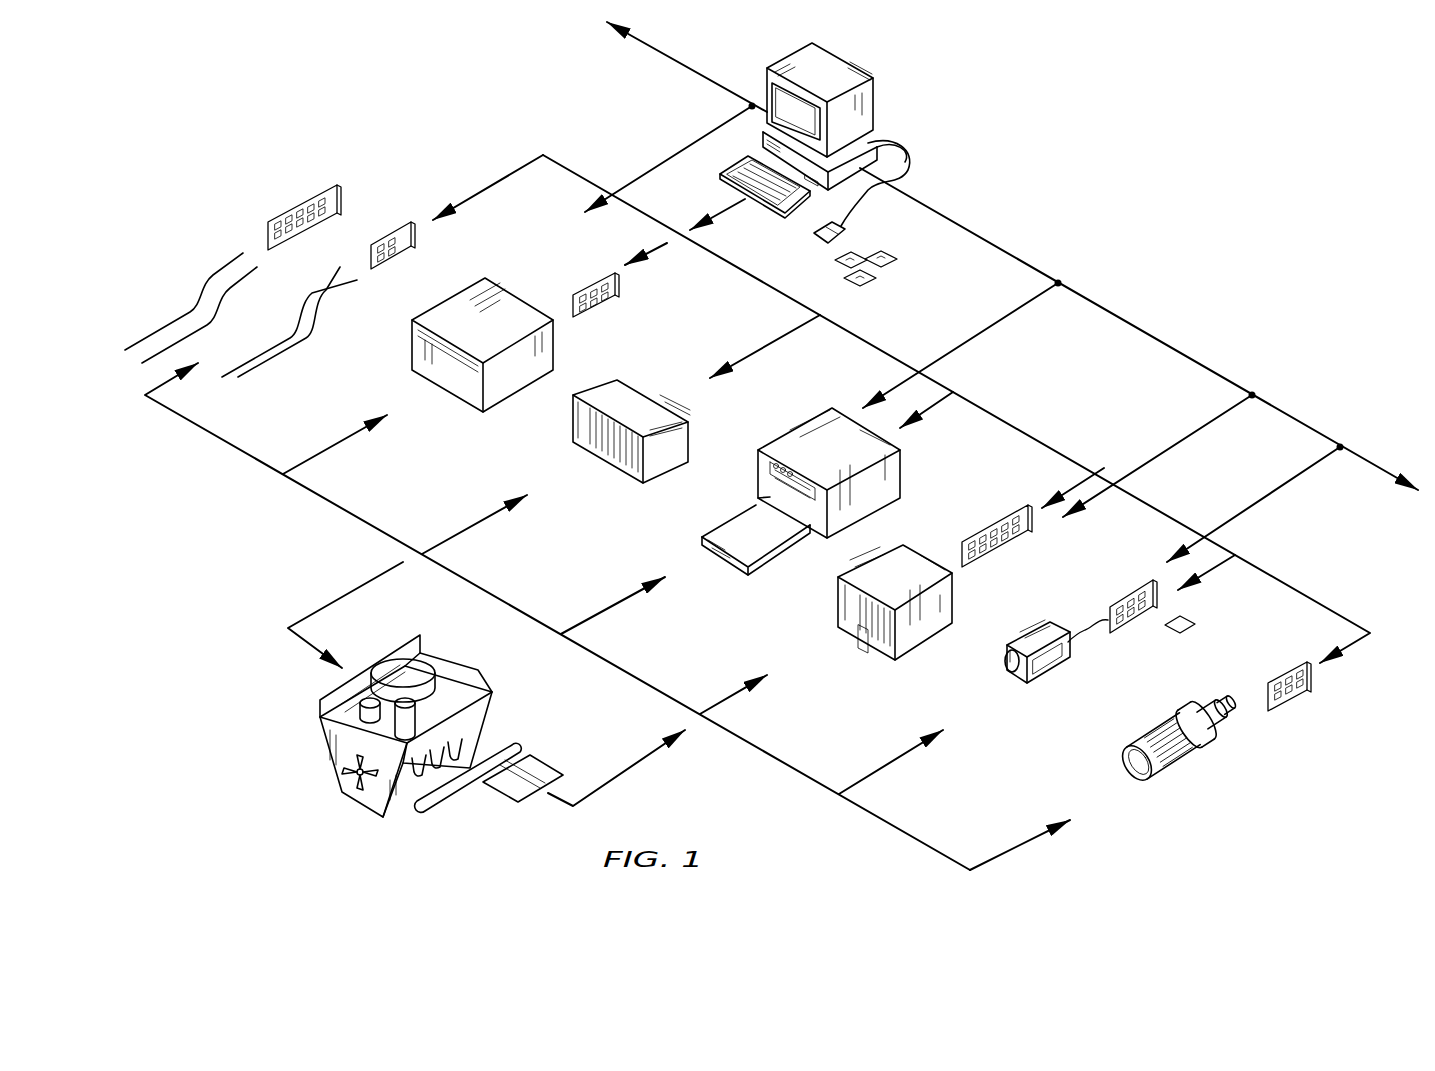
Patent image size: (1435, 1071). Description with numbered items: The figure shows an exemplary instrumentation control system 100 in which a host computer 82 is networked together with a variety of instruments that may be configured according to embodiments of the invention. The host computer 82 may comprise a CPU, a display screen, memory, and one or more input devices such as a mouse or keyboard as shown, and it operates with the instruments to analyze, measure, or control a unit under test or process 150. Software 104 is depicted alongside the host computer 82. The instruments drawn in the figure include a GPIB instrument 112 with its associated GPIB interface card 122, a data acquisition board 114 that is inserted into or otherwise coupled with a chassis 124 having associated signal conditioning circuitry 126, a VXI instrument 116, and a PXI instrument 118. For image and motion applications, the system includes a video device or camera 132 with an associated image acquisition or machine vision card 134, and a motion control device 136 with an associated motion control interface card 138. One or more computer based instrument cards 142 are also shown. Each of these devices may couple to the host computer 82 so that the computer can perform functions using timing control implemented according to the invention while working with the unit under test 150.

The host computer 82 is at (838, 67).
The instrumentation control system 100 is at (1117, 190).
The software 104 is at (870, 276).
The GPIB instrument 112 is at (447, 310).
The data acquisition board 114 is at (1022, 503).
The VXI instrument 116 is at (800, 442).
The PXI instrument 118 is at (637, 400).
The GPIB interface card 122 is at (585, 277).
The chassis 124 is at (863, 638).
The signal conditioning circuitry 126 is at (865, 632).
The video device or camera 132 is at (1038, 670).
The image acquisition card 134 is at (1127, 595).
The motion control device 136 is at (1177, 760).
The motion control interface card 138 is at (1292, 700).
The computer based instrument card 142 is at (280, 215).
The unit under test 150 is at (335, 738).